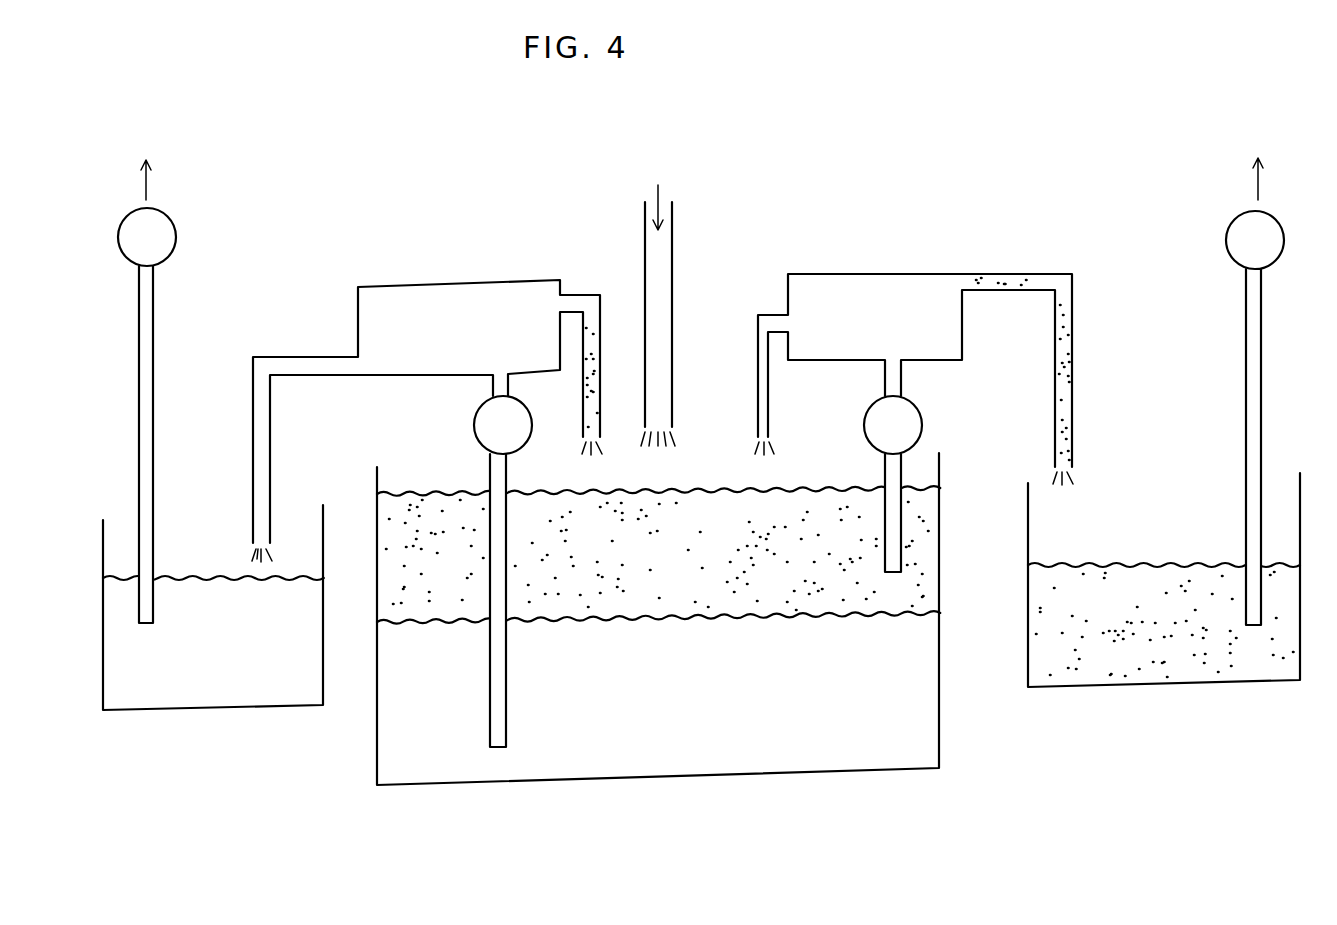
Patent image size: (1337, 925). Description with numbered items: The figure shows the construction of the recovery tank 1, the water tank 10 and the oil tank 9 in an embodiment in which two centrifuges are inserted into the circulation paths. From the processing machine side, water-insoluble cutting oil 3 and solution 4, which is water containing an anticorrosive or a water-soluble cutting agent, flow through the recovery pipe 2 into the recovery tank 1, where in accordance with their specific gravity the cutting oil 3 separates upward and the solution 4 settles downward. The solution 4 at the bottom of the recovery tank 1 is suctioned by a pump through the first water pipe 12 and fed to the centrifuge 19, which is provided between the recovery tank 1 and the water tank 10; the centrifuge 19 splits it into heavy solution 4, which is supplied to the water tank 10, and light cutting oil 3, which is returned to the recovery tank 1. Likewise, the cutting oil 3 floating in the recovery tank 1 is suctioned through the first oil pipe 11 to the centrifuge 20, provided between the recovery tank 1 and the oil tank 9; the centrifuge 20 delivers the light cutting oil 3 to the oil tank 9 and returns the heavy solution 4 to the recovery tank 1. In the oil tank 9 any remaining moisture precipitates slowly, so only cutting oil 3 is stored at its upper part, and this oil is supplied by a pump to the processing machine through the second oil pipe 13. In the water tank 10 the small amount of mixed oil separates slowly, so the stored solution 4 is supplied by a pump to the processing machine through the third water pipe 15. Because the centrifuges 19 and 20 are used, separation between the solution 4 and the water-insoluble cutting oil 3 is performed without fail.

The recovery tank 1 is at (685, 780).
The recovery pipe 2 is at (674, 297).
The water-insoluble cutting oil 3 is at (665, 554).
The solution 4 is at (730, 714).
The oil tank 9 is at (1125, 689).
The water tank 10 is at (215, 711).
The first oil pipe 11 is at (880, 462).
The first water pipe 12 is at (507, 704).
The second oil pipe 13 is at (1263, 336).
The third water pipe 15 is at (151, 330).
The centrifuge 19 is at (433, 279).
The centrifuge 20 is at (876, 268).